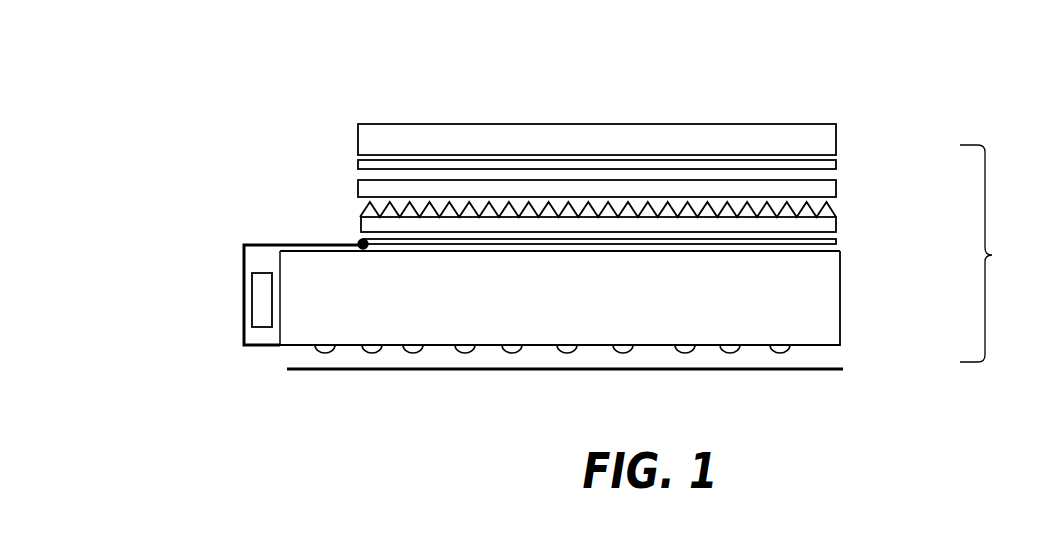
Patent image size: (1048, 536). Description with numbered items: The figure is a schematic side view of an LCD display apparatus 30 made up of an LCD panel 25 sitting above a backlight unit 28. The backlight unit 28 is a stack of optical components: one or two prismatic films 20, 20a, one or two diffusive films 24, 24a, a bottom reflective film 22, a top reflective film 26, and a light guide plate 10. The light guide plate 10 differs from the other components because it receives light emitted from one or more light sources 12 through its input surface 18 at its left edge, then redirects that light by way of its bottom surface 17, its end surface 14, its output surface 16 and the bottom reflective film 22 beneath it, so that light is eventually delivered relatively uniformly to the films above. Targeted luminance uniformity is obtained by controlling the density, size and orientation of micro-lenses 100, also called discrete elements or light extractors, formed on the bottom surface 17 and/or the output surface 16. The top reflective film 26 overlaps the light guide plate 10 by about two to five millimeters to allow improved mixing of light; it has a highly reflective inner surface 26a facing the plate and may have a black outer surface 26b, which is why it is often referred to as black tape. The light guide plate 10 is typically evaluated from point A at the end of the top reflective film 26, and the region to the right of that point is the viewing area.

The LCD display apparatus 30 is at (272, 40).
The LCD panel 25 is at (647, 123).
The diffusive film 24a is at (655, 156).
The prismatic film 20a is at (656, 191).
The prismatic film 20 is at (656, 217).
The diffusive film 24 is at (655, 243).
The output surface 16 is at (630, 269).
The end surface 14 is at (875, 305).
The light guide plate 10 is at (560, 298).
The bottom surface 17 is at (608, 359).
The bottom reflective film 22 is at (565, 387).
The micro-lenses 100 is at (835, 380).
The top reflective film 26 is at (309, 267).
The inner surface 26a is at (220, 261).
The outer surface 26b is at (237, 224).
The light source 12 is at (222, 300).
The input surface 18 is at (256, 357).
The backlight unit 28 is at (992, 255).